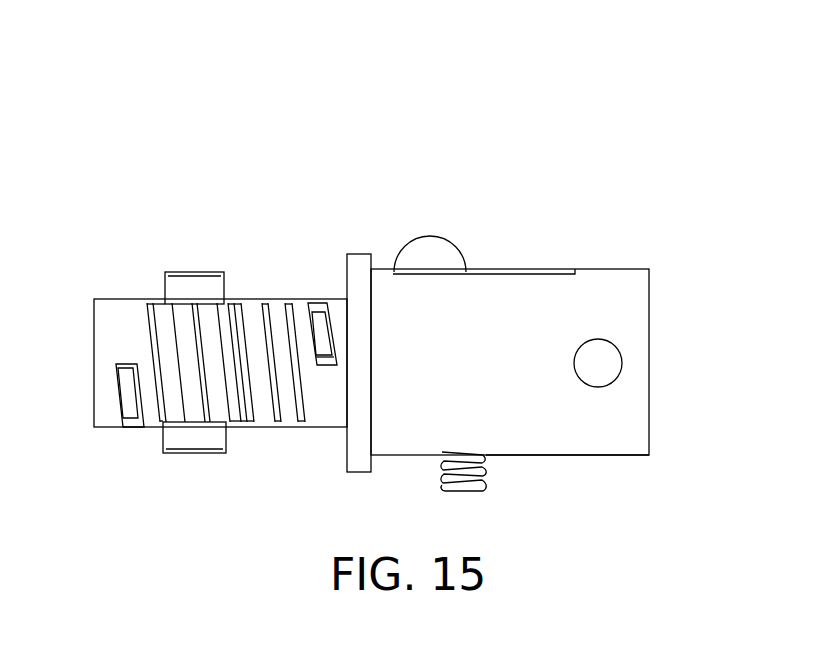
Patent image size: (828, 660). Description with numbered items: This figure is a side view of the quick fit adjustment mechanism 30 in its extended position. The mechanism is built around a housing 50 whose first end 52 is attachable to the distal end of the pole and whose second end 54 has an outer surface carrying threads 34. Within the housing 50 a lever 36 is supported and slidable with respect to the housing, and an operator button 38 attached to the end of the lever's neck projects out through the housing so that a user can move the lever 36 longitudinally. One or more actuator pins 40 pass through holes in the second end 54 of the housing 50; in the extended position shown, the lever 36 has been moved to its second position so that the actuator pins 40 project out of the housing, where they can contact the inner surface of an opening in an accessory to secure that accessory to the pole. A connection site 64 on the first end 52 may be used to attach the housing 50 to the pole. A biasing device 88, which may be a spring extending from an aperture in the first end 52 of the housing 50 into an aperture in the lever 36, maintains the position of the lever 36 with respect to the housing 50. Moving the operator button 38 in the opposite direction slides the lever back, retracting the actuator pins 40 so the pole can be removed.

The quick fit adjustment mechanism 30 is at (182, 128).
The threads 34 is at (265, 377).
The lever 36 is at (307, 212).
The operator button 38 is at (442, 258).
The actuator pins 40 is at (197, 292).
The housing 50 is at (440, 173).
The first end 52 is at (560, 523).
The second end 54 is at (148, 512).
The connection sites 64 is at (600, 368).
The biasing device 88 is at (460, 493).